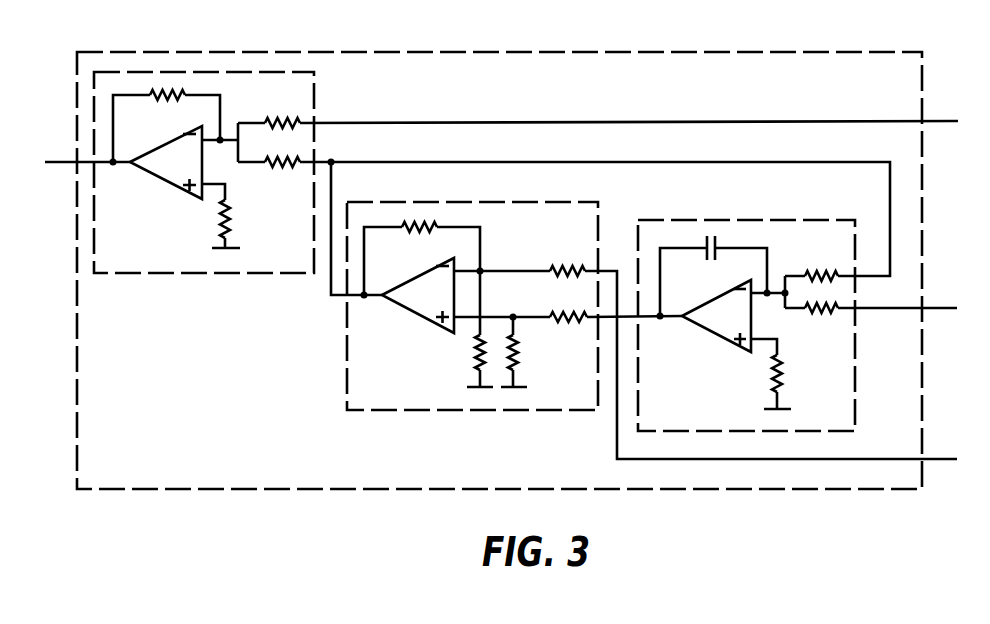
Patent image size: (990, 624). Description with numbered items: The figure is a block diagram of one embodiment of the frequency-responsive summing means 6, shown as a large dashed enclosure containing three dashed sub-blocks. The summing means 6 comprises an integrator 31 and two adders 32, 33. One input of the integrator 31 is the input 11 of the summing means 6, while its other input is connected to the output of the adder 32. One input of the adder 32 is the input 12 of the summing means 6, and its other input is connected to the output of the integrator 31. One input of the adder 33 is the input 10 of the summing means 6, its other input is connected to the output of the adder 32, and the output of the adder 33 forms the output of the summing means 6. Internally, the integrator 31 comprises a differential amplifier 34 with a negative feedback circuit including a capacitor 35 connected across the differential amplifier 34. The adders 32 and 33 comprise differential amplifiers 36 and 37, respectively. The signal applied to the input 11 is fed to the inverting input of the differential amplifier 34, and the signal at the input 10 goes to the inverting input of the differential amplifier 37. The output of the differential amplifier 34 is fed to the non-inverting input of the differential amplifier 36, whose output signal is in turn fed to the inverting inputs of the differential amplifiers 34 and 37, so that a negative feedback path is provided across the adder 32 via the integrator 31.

The frequency-responsive summing means 6 is at (930, 62).
The input of the summing means 10 is at (937, 118).
The input of the summing means 11 is at (935, 305).
The input of the summing means 12 is at (935, 451).
The integrator 31 is at (815, 216).
The adder 32 is at (605, 204).
The adder 33 is at (320, 99).
The differential amplifier 34 is at (716, 316).
The capacitor 35 is at (718, 243).
The differential amplifier 36 is at (418, 295).
The differential amplifier 37 is at (166, 162).